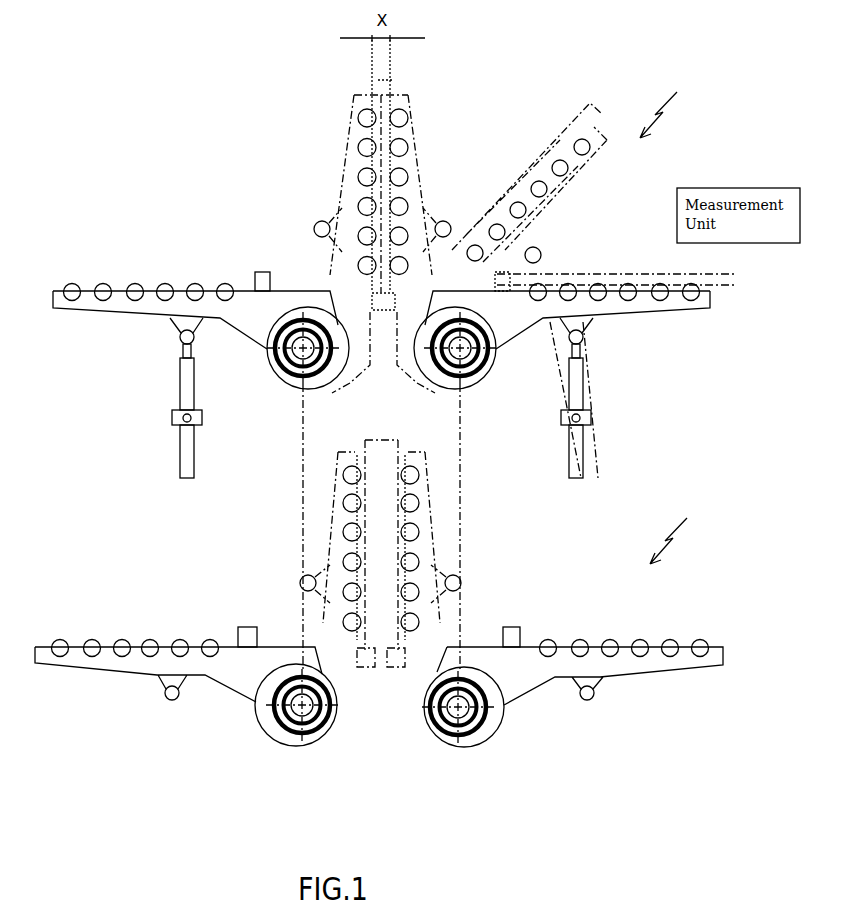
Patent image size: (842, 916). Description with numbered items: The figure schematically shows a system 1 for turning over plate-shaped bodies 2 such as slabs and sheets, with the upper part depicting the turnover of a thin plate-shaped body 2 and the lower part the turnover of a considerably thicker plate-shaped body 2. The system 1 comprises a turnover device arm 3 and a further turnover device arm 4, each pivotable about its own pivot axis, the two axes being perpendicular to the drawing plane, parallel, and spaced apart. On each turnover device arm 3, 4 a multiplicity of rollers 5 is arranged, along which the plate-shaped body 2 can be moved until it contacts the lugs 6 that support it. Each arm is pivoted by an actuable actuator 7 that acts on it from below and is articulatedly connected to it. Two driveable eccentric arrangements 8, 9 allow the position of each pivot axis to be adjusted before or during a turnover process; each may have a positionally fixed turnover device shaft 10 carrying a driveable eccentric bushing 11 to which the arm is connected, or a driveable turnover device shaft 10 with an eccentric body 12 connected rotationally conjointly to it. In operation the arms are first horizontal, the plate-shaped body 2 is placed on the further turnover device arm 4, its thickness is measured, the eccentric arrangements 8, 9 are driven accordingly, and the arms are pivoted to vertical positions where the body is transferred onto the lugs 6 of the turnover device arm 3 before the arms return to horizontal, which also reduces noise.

The system 1 is at (670, 322).
The plate-shaped body 2 is at (387, 165).
The turnover device arm 3 is at (108, 318).
The further turnover device arm 4 is at (657, 317).
The rollers 5 is at (197, 290).
The lugs 6 is at (257, 272).
The actuable actuator 7 is at (186, 378).
The driveable eccentric arrangement 8 is at (290, 378).
The driveable eccentric arrangement 9 is at (470, 380).
The turnover device shaft 10 is at (305, 335).
The driveable eccentric bushing 11 is at (373, 573).
The eccentric body 12 is at (308, 377).